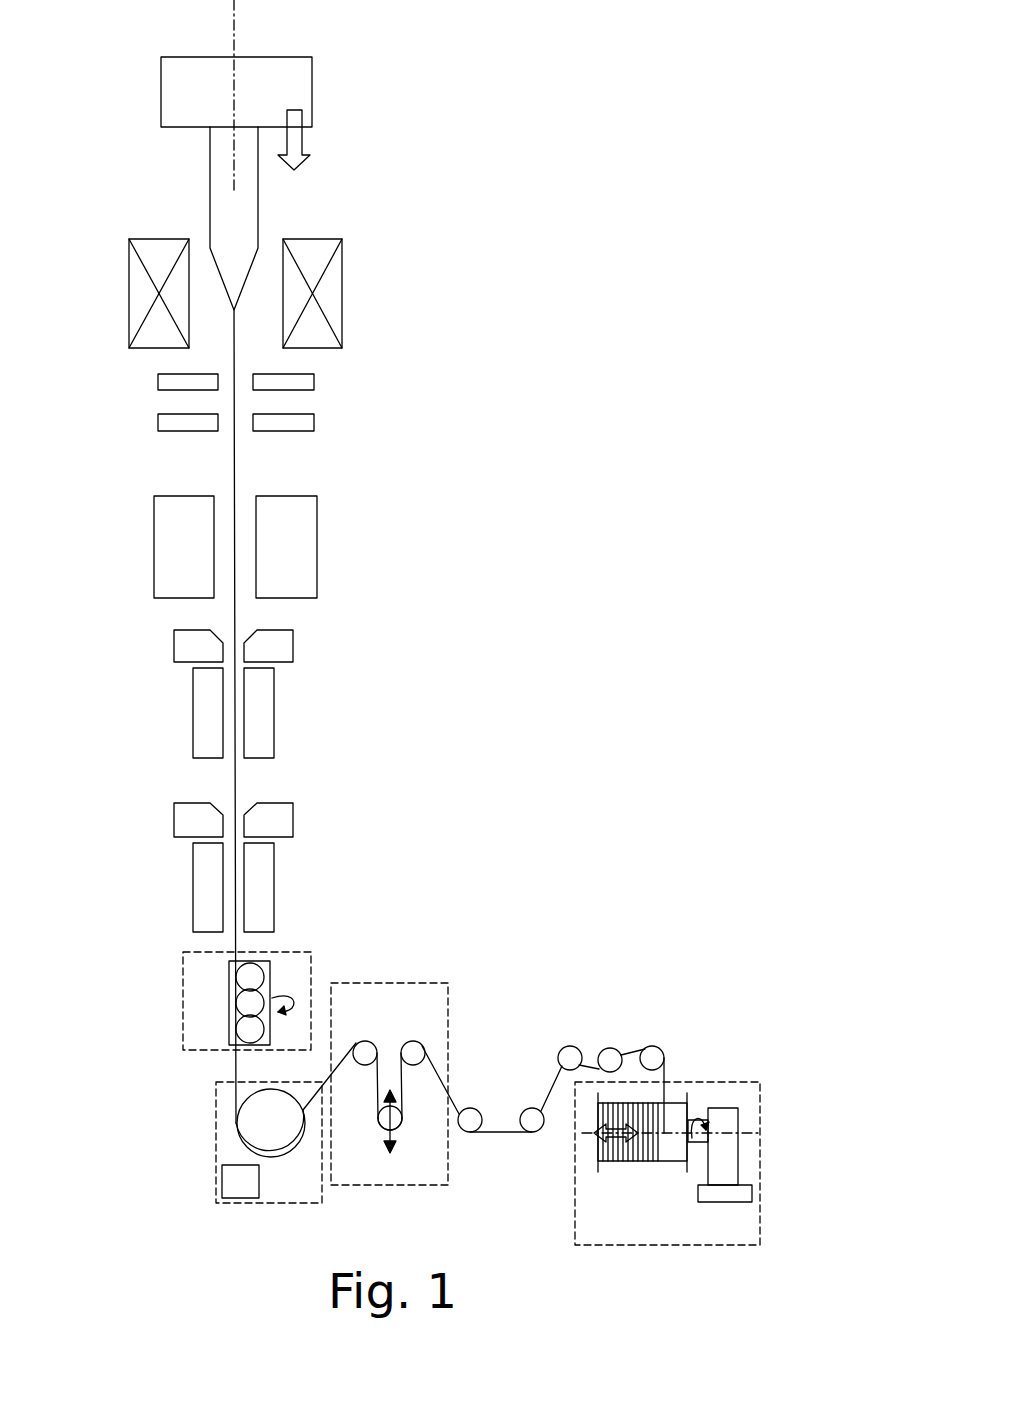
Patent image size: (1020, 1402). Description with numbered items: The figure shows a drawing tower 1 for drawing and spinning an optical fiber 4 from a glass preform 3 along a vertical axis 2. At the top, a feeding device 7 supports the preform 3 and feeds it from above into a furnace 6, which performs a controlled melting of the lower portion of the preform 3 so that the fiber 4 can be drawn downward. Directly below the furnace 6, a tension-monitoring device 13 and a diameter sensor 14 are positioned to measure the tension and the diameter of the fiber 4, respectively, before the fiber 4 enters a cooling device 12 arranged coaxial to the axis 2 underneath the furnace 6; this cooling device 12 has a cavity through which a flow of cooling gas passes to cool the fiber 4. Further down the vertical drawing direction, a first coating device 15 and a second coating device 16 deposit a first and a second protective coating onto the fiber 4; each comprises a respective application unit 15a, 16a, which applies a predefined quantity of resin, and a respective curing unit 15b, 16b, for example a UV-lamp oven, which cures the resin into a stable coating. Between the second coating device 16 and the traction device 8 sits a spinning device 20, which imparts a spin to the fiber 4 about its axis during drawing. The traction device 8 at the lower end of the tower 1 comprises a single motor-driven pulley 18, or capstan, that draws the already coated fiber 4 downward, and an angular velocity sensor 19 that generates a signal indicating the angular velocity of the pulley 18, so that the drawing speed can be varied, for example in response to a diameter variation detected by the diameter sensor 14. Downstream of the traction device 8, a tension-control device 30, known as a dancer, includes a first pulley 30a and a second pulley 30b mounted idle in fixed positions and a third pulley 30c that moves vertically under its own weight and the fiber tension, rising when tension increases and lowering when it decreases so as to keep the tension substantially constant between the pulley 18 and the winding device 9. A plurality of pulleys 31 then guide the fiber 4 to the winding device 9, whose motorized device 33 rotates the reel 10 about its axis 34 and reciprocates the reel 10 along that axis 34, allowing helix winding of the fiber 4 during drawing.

The drawing tower 1 is at (410, 218).
The vertical axis 2 is at (235, 30).
The glass preform 3 is at (238, 218).
The optical fiber 4 is at (235, 470).
The furnace 6 is at (330, 312).
The feeding device 7 is at (312, 93).
The traction device 8 is at (235, 1144).
The winding device 9 is at (690, 1158).
The reel 10 is at (677, 1152).
The cooling device 12 is at (312, 537).
The tension-monitoring device 13 is at (312, 383).
The diameter sensor 14 is at (312, 422).
The first coating device 15 is at (313, 694).
The application unit 15a is at (278, 650).
The curing unit 15b is at (263, 707).
The second coating device 16 is at (313, 867).
The application unit 16a is at (283, 822).
The curing unit 16b is at (282, 887).
The motor-driven pulley 18 is at (282, 1148).
The angular velocity sensor 19 is at (235, 1187).
The spinning device 20 is at (195, 985).
The tension-control device 30 is at (427, 1076).
The first pulley 30a is at (365, 1042).
The second pulley 30b is at (413, 1042).
The third pulley 30c is at (395, 1122).
The pulleys 31 is at (572, 1044).
The motorized device 33 is at (738, 1147).
The axis 34 is at (752, 1125).